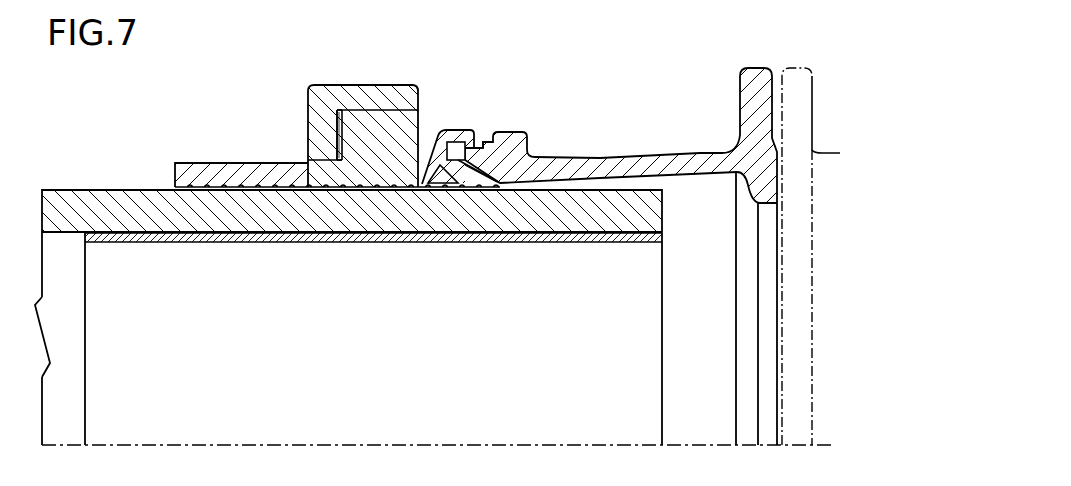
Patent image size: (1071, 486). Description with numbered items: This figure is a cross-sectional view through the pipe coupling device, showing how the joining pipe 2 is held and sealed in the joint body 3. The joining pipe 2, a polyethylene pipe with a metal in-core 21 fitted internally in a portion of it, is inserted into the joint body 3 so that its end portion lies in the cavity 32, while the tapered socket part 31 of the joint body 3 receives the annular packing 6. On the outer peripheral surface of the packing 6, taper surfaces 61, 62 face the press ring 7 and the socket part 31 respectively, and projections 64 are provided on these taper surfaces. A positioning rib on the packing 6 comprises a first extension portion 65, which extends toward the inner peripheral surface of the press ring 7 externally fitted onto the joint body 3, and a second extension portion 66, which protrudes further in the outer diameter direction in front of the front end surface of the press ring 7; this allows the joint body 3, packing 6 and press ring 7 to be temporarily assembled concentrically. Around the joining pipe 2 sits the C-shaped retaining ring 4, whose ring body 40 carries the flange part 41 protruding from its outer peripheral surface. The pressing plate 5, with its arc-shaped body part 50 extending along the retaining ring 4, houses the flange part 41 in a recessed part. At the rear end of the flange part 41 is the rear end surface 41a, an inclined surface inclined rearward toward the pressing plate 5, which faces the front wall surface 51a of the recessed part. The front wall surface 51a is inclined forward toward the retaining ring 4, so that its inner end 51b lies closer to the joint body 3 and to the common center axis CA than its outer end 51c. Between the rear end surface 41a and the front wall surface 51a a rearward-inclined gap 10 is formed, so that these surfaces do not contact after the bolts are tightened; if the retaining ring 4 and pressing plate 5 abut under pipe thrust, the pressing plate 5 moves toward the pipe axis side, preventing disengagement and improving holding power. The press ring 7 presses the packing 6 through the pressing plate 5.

The joining pipe 2 is at (113, 203).
The in-core 21 is at (178, 243).
The joint body 3 is at (747, 98).
The socket part 31 is at (486, 162).
The cavity 32 is at (640, 172).
The retaining ring 4 is at (212, 159).
The ring body 40 is at (213, 163).
The flange part 41 is at (383, 153).
The rear end surface 41a is at (333, 147).
The pressing plate 5 is at (414, 85).
The body part 50 is at (331, 108).
The front wall surface 51a is at (358, 84).
The inner end 51b is at (337, 161).
The outer end 51c is at (336, 108).
The gap 10 is at (341, 132).
The packing 6 is at (456, 136).
The taper surface 61 is at (442, 168).
The taper surface 62 is at (492, 182).
The projections 64 is at (471, 180).
The first extension portion 65 is at (465, 150).
The second extension portion 66 is at (488, 143).
The press ring 7 is at (437, 140).
The center axis CA is at (405, 440).